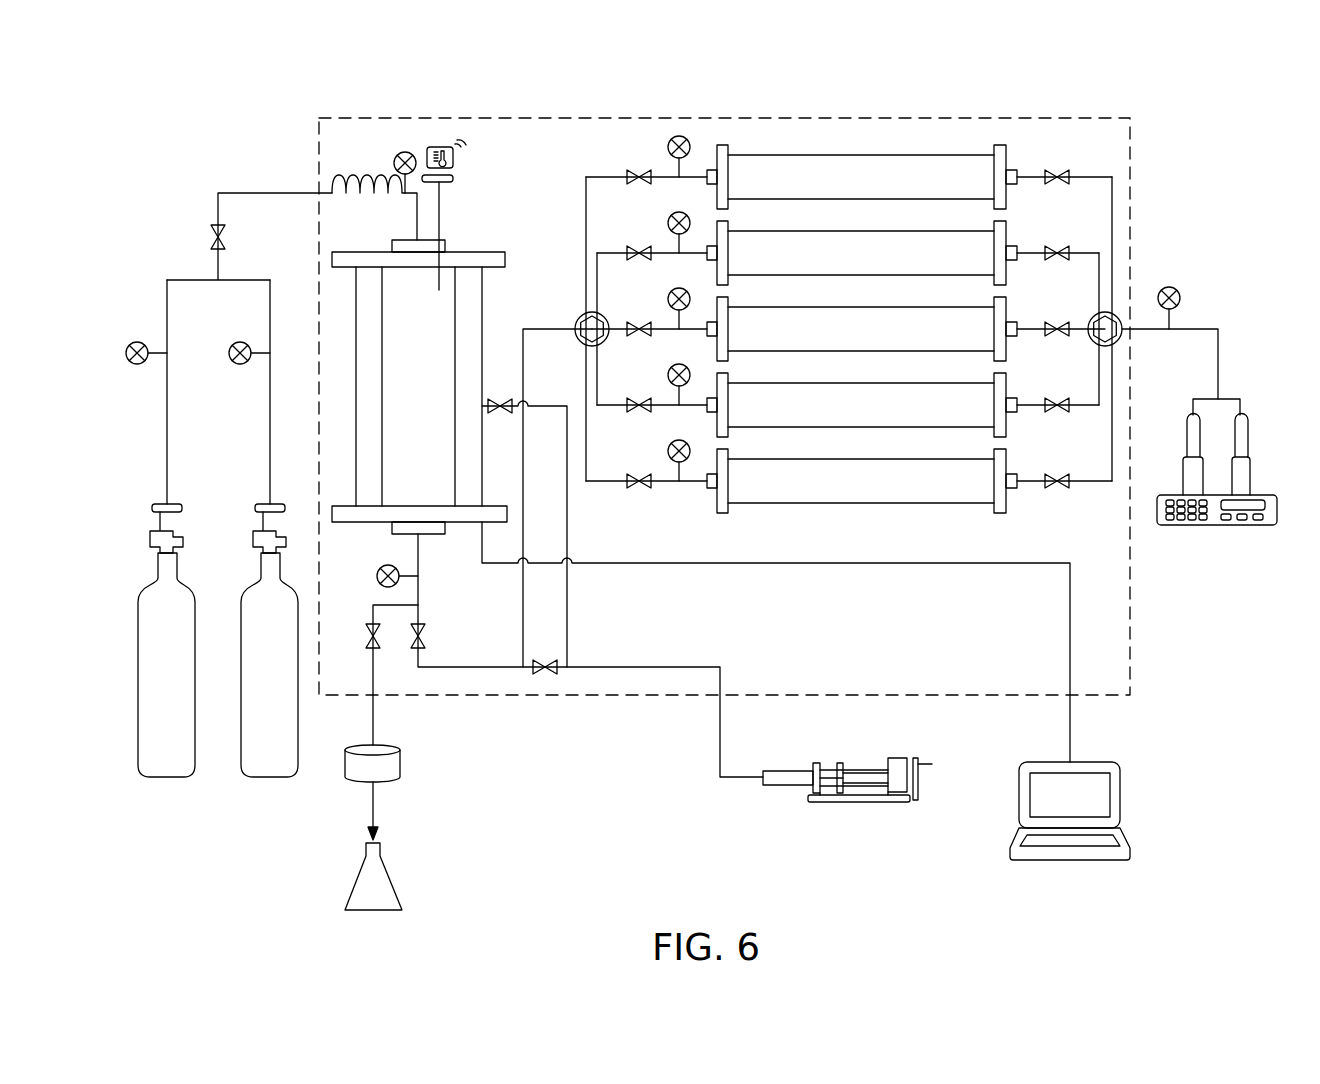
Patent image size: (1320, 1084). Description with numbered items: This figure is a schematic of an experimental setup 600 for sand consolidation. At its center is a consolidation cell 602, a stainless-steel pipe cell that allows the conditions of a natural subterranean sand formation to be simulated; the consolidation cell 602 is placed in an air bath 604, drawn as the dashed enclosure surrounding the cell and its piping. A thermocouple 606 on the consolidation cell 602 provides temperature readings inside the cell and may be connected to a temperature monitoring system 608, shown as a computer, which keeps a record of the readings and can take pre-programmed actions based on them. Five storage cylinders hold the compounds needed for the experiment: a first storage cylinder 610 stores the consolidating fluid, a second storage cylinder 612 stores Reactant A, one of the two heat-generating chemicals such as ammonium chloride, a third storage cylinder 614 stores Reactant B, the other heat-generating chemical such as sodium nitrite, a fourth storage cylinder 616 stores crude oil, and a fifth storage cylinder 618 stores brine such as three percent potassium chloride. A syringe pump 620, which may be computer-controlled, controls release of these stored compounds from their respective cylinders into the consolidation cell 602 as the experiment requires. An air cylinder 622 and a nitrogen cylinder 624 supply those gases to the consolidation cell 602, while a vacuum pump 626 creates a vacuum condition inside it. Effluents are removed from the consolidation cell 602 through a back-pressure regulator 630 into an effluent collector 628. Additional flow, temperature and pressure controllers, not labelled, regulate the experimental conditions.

The experimental setup 600 is at (1158, 82).
The consolidation cell 602 is at (480, 250).
The air bath 604 is at (888, 661).
The thermocouple 606 is at (438, 148).
The temperature monitoring system 608 is at (1120, 800).
The first storage cylinder 610 is at (840, 190).
The second storage cylinder 612 is at (840, 266).
The third storage cylinder 614 is at (840, 342).
The fourth storage cylinder 616 is at (840, 418).
The fifth storage cylinder 618 is at (840, 494).
The syringe pump 620 is at (1218, 528).
The air cylinder 622 is at (167, 778).
The nitrogen cylinder 624 is at (270, 778).
The vacuum pump 626 is at (855, 802).
The effluent collector 628 is at (390, 883).
The back-pressure regulator 630 is at (400, 767).